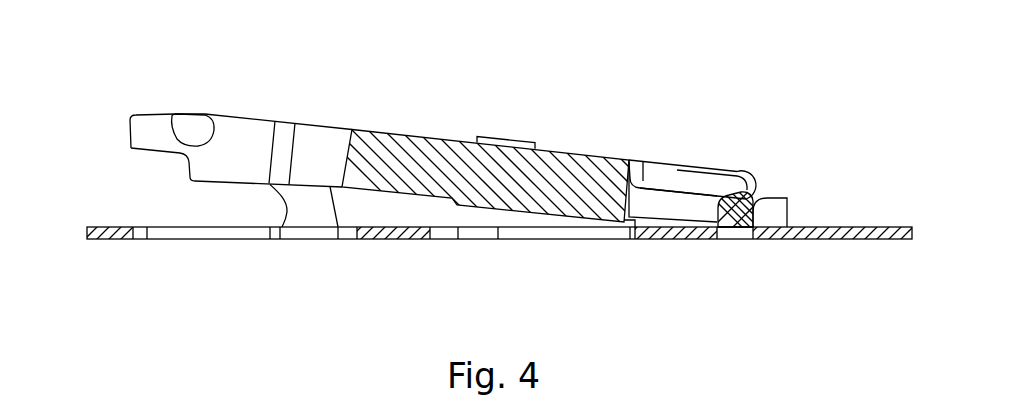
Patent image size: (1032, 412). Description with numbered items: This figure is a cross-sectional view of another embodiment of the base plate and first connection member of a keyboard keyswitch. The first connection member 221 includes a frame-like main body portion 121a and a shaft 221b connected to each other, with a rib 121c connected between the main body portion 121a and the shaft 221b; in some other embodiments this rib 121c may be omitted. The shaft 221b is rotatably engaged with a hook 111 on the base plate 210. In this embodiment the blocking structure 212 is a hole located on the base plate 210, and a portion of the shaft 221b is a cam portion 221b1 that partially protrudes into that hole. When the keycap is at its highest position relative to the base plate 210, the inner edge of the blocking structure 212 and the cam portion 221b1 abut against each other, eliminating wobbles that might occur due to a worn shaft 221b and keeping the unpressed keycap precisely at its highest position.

The base plate 210 is at (122, 227).
The blocking structure 212 is at (743, 250).
The first connection member 221 is at (299, 76).
The shaft 221b is at (746, 199).
The cam portion 221b1 is at (722, 229).
The main body portion 121a is at (437, 150).
The rib 121c is at (662, 197).
The hook 111 is at (718, 178).